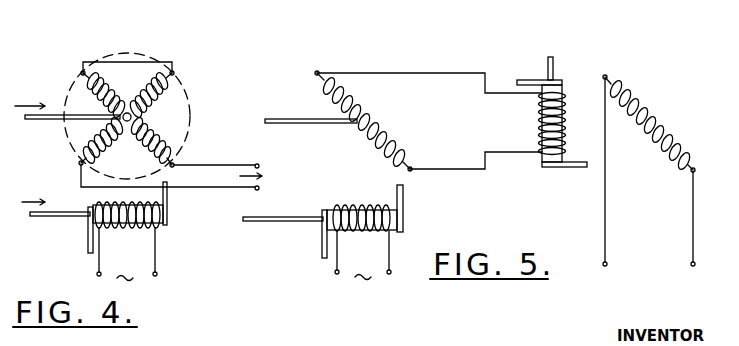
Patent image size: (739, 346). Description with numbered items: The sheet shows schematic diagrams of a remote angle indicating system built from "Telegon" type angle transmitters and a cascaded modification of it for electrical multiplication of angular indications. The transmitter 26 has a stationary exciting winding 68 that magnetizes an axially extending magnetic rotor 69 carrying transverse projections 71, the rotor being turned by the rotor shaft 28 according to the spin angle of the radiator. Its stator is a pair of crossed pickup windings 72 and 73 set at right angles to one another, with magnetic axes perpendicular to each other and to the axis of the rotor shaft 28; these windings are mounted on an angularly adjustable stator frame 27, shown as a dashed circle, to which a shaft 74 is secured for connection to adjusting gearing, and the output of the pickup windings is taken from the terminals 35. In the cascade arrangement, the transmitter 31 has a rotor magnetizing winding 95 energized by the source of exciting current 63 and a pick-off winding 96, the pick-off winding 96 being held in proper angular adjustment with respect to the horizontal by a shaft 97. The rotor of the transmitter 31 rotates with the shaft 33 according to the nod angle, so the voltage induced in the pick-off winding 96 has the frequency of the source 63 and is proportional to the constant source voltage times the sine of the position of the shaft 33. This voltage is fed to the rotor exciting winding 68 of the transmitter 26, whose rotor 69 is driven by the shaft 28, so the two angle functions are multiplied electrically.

In FIG. 4, the transmitter 26 is at (143, 41).
In FIG. 5, the transmitter 26 is at (661, 86).
In FIG. 4, the angularly adjustable stator frame 27 is at (190, 124).
In FIG. 4, the rotor shaft 28 is at (50, 217).
In FIG. 5, the rotor shaft 28 is at (555, 63).
In FIG. 5, the transmitter 31 is at (397, 66).
In FIG. 5, the shaft 33 is at (277, 223).
In FIG. 4, the output terminals 35 is at (170, 166).
In FIG. 5, the source of exciting current 63 is at (372, 286).
In FIG. 4, the stationary exciting winding 68 is at (112, 225).
In FIG. 5, the stationary exciting winding 68 is at (565, 123).
In FIG. 4, the magnetic rotor 69 is at (157, 221).
In FIG. 5, the magnetic rotor 69 is at (553, 157).
In FIG. 4, the transverse projections 71 is at (87, 238).
In FIG. 4, the pickup winding 72 is at (166, 99).
In FIG. 5, the pickup winding 72 is at (667, 128).
In FIG. 4, the pickup winding 73 is at (90, 90).
In FIG. 4, the shaft 74 is at (44, 121).
In FIG. 5, the rotor magnetizing winding 95 is at (348, 232).
In FIG. 5, the pick-off winding 96 is at (374, 125).
In FIG. 5, the shaft 97 is at (302, 125).